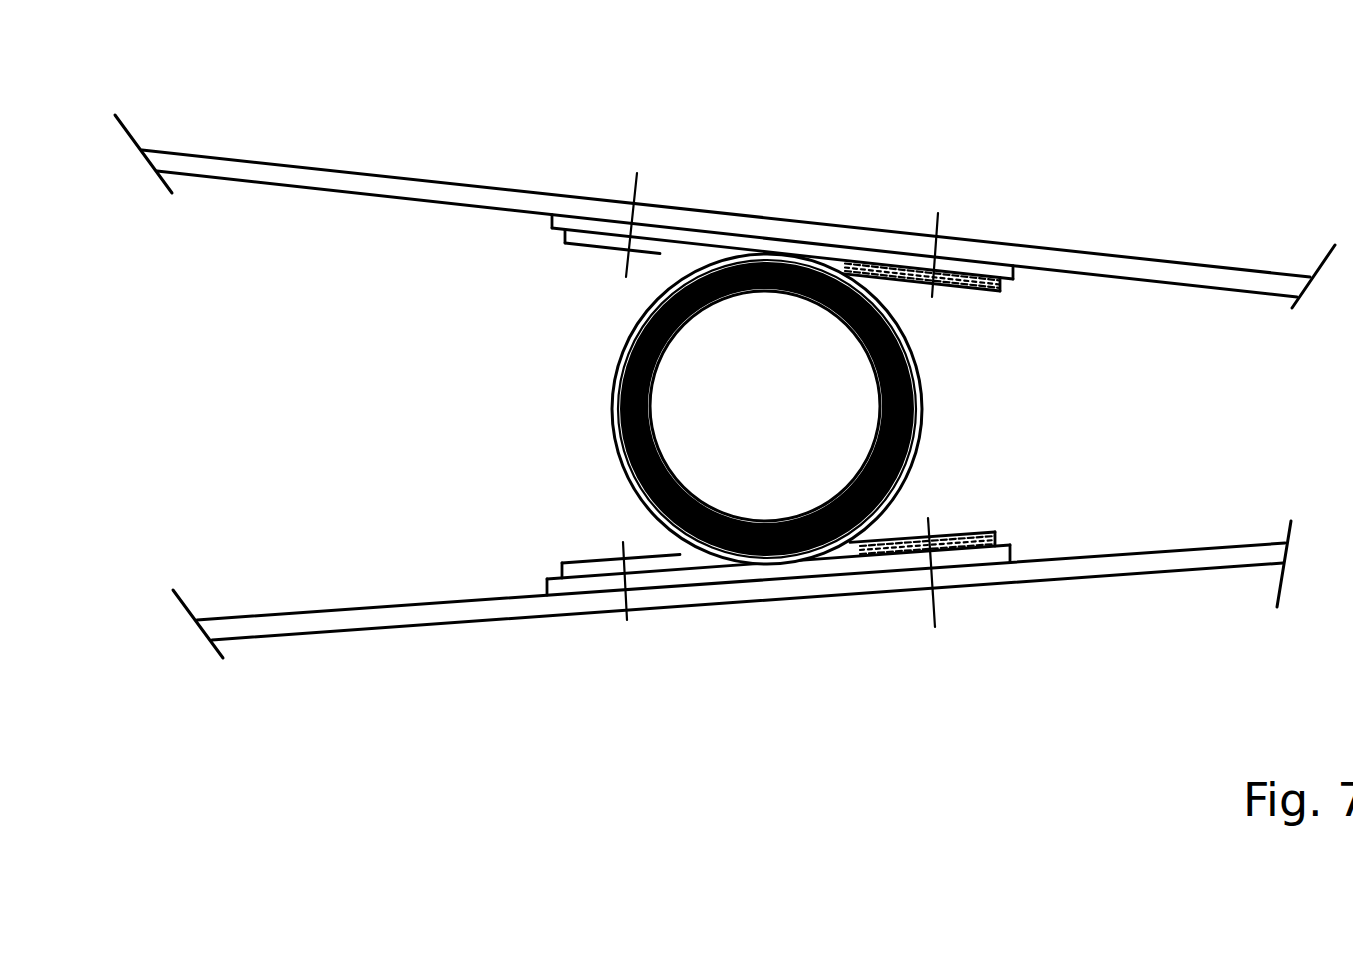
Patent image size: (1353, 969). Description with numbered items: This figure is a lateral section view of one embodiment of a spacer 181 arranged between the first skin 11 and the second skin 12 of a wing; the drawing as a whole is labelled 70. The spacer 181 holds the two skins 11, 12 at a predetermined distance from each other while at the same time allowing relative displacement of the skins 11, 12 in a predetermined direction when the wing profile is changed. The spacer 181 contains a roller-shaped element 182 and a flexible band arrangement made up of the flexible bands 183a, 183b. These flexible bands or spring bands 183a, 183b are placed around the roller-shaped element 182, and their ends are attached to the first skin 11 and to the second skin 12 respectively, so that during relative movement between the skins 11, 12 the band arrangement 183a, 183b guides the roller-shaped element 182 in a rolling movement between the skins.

The assembly 70 is at (716, 441).
The first skin 11 is at (1137, 260).
The second skin 12 is at (250, 638).
The spacer 181 is at (854, 409).
The roller-shaped element 182 is at (823, 533).
The flexible band 183a is at (873, 268).
The flexible band 183b is at (610, 243).